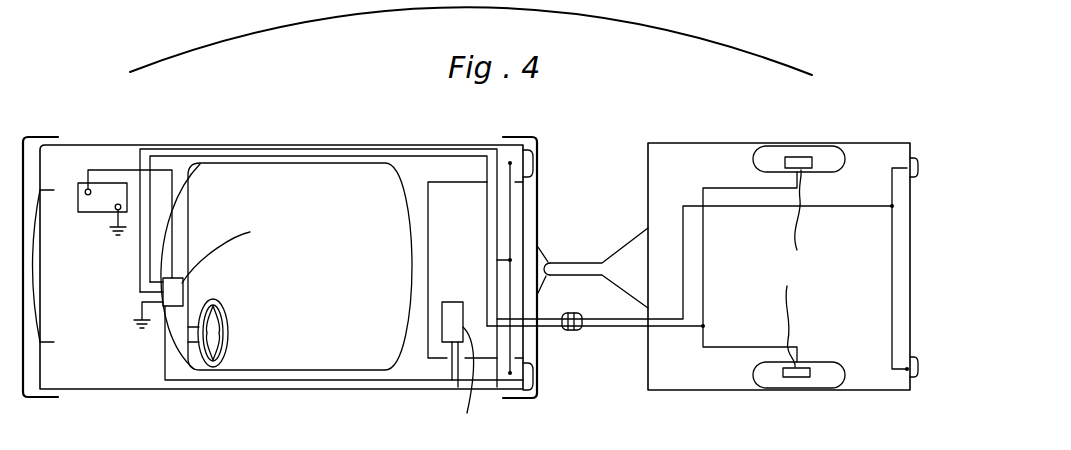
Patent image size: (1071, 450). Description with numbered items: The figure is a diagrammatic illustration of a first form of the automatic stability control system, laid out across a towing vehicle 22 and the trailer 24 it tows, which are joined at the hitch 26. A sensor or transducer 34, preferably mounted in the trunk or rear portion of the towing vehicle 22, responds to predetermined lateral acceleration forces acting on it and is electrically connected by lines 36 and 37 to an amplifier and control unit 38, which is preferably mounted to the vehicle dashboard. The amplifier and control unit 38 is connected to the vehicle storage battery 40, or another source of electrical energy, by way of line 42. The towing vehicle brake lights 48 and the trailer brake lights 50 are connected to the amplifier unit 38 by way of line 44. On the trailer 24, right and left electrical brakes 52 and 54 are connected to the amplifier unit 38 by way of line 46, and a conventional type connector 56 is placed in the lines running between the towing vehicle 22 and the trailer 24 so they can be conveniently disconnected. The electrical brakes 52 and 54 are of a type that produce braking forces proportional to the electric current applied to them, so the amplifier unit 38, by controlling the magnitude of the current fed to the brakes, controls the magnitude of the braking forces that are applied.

The towing vehicle 22 is at (105, 373).
The trailer 24 is at (667, 373).
The hitch 26 is at (551, 264).
The sensor or transducer 34 is at (452, 303).
The line 36 is at (285, 377).
The line 37 is at (360, 381).
The amplifier and control unit 38 is at (181, 285).
The vehicle storage battery 40 is at (85, 205).
The line 42 is at (172, 237).
The line 44 is at (140, 282).
The line 46 is at (138, 253).
The towing vehicle brake lights 48 is at (555, 373).
The trailer brake lights 50 is at (916, 158).
The right electrical brake 52 is at (801, 167).
The left electrical brake 54 is at (802, 367).
The connector 56 is at (595, 293).